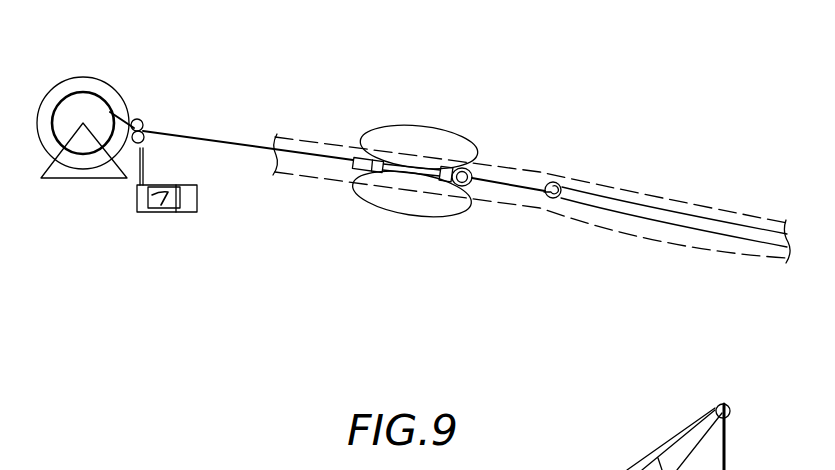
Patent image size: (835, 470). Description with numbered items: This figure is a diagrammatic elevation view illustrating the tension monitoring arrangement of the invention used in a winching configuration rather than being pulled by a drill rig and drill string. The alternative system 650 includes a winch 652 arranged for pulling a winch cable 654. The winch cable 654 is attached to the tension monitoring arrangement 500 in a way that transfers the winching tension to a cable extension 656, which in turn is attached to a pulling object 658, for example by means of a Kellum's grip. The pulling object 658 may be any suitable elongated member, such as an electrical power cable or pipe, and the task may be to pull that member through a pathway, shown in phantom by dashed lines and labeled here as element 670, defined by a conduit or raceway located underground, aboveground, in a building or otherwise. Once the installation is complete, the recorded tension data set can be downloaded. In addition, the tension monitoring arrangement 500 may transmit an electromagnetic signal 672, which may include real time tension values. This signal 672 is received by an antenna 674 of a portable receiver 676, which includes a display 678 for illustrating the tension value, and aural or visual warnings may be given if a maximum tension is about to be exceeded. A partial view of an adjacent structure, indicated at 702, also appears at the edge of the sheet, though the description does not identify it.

The tension monitoring arrangement 500 is at (433, 160).
The system 650 is at (418, 93).
The winch 652 is at (110, 87).
The winch cable 654 is at (198, 137).
The cable extension 656 is at (521, 186).
The pulling object 658 is at (652, 215).
The housing tube 670 is at (317, 138).
The electromagnetic signal 672 is at (453, 217).
The antenna 674 is at (145, 167).
The portable receiver 676 is at (197, 195).
The display 678 is at (147, 200).
The mast 702 is at (752, 469).